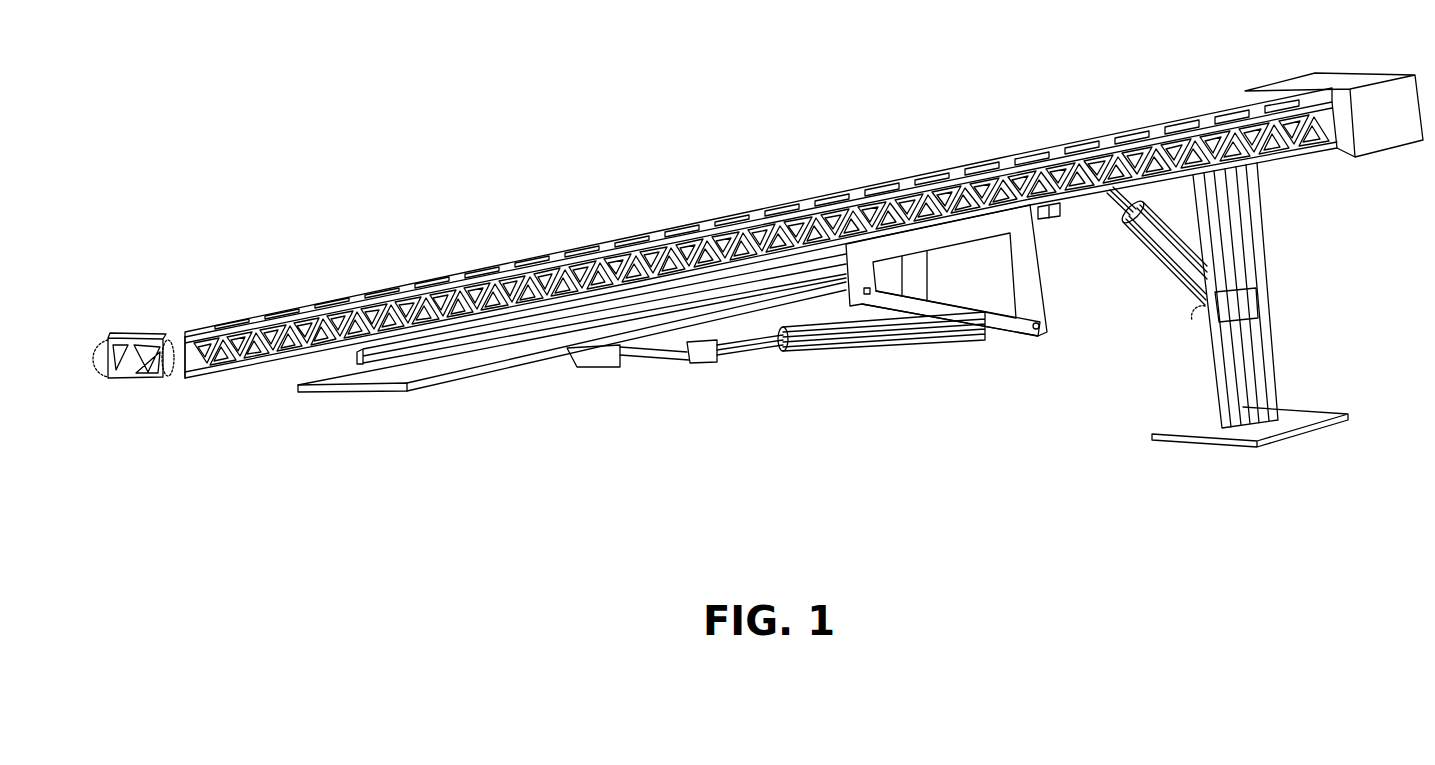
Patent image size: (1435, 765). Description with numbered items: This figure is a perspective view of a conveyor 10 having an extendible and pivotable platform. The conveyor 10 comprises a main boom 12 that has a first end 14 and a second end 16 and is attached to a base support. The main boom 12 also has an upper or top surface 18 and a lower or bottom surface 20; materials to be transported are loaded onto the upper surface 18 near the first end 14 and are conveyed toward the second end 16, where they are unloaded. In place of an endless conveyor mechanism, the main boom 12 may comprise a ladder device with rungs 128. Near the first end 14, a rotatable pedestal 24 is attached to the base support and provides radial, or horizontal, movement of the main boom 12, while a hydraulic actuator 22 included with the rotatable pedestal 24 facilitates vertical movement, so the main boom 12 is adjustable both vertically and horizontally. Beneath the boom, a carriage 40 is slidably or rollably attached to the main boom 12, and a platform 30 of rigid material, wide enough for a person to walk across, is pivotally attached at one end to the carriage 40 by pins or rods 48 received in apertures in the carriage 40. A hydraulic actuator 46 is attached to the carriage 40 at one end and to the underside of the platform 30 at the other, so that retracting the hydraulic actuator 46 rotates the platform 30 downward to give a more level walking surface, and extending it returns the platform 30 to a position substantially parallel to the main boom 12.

The conveyor 10 is at (716, 155).
The main boom 12 is at (440, 283).
The first end 14 is at (1222, 88).
The second end 16 is at (204, 398).
The upper surface 18 is at (1006, 144).
The lower surface 20 is at (1098, 208).
The hydraulic actuator 22 is at (1157, 288).
The rotatable pedestal 24 is at (1265, 270).
The platform 30 is at (427, 382).
The carriage 40 is at (1005, 328).
The hydraulic actuator 46 is at (806, 350).
The pins or rods 48 is at (870, 293).
The rungs 128 is at (266, 307).